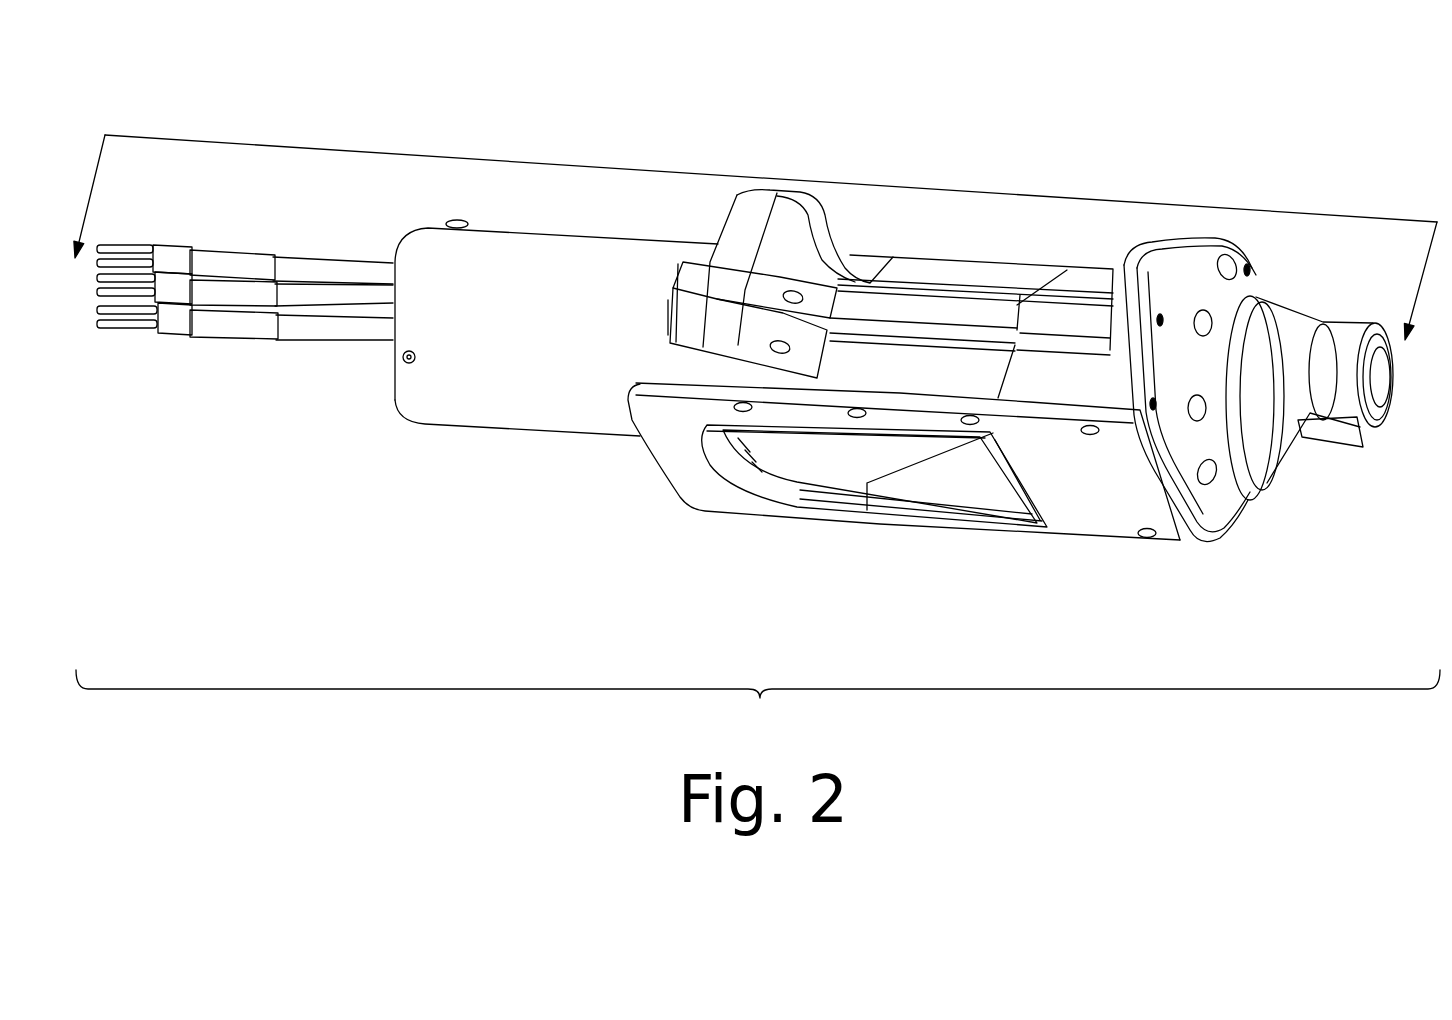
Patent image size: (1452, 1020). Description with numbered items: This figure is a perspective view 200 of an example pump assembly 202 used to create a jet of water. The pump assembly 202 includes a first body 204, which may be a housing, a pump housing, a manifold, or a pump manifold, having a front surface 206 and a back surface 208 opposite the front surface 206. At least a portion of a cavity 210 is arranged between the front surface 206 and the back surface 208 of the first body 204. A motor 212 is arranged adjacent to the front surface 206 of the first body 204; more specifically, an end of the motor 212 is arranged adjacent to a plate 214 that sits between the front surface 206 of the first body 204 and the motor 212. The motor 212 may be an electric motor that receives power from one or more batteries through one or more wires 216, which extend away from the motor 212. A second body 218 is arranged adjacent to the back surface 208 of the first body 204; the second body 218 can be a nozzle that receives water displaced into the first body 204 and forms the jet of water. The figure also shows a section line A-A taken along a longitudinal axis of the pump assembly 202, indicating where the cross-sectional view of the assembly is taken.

The perspective view 200 is at (758, 698).
The pump assembly 202 is at (290, 80).
The first body 204 is at (1007, 267).
The front surface 206 is at (755, 247).
The back surface 208 is at (1173, 270).
The cavity 210 is at (831, 461).
The motor 212 is at (583, 236).
The plate 214 is at (753, 198).
The wires 216 is at (164, 223).
The second body 218 is at (1297, 308).